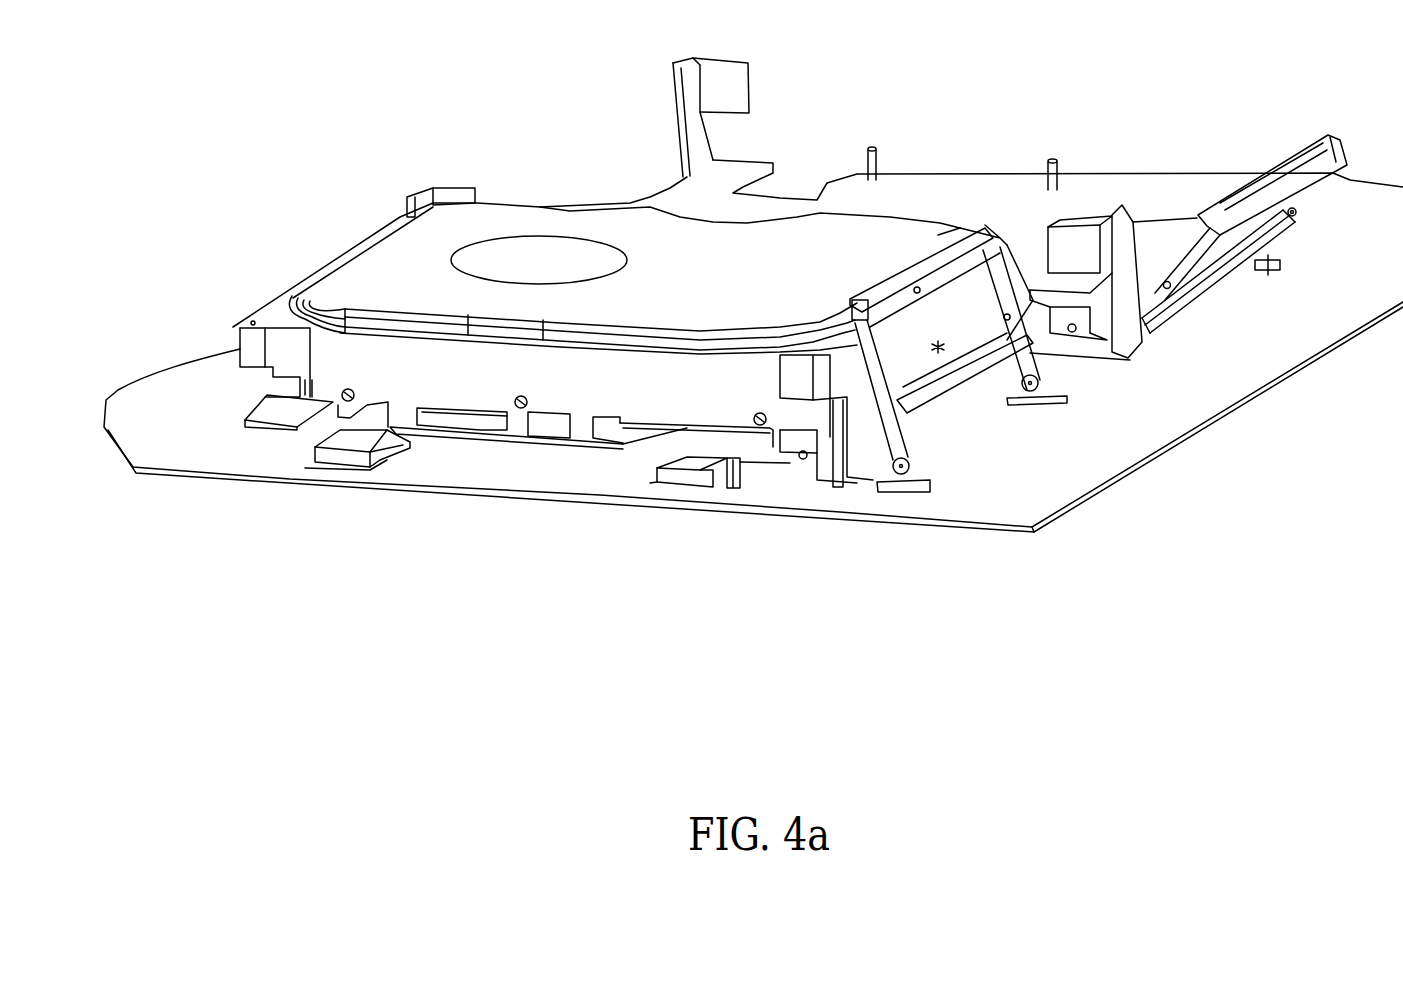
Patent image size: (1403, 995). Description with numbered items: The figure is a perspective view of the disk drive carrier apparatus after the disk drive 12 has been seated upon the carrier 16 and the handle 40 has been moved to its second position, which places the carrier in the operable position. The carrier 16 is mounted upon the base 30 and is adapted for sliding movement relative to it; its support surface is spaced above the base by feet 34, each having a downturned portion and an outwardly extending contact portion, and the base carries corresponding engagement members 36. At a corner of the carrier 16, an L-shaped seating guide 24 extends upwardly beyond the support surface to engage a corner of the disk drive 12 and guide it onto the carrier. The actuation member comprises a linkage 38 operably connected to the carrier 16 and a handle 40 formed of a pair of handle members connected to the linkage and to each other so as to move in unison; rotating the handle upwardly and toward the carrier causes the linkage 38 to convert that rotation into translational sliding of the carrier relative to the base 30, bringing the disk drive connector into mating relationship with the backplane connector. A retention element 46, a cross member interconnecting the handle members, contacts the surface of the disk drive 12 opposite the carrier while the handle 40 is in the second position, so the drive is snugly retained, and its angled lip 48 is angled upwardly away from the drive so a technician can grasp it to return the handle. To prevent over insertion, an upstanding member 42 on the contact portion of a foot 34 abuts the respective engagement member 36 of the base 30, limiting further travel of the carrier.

The disk drive 12 is at (548, 212).
The carrier 16 is at (488, 445).
The seating guide 24 is at (432, 186).
The base 30 is at (1292, 341).
The foot 34 is at (790, 450).
The engagement member 36 is at (360, 437).
The linkage 38 is at (930, 393).
The handle 40 is at (1037, 358).
The upstanding member 42 is at (730, 470).
The retention element 46 is at (938, 258).
The angled lip 48 is at (880, 280).